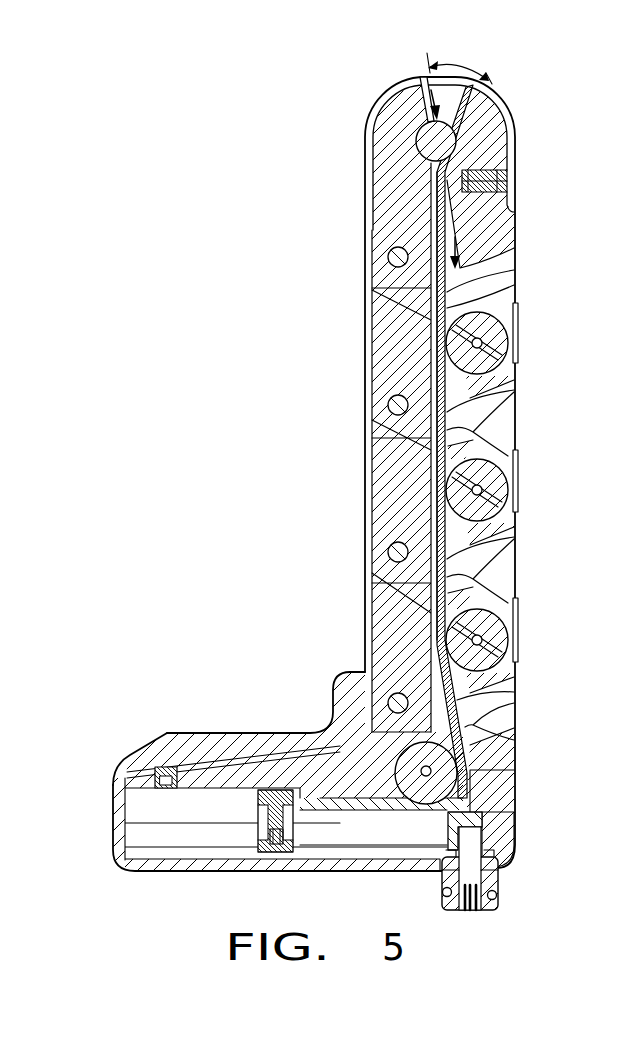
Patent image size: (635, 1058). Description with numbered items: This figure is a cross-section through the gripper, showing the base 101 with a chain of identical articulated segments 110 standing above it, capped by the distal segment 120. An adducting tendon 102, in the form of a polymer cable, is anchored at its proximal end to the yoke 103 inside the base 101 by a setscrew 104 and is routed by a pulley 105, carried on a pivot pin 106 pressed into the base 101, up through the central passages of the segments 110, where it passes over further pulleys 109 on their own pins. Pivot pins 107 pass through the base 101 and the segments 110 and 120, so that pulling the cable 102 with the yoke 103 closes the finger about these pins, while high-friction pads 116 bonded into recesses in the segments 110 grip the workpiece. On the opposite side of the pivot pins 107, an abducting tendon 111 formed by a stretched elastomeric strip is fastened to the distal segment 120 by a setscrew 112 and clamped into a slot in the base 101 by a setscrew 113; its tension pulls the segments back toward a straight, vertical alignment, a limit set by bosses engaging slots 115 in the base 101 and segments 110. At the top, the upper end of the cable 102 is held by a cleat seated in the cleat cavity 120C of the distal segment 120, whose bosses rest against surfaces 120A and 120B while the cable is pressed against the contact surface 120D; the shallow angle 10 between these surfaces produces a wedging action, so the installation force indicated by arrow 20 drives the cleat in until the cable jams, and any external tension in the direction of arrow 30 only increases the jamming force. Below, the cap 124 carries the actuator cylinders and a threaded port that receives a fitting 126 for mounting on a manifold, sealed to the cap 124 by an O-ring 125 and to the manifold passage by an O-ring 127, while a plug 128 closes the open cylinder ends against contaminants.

The angle 10 is at (459, 67).
The arrow 20 is at (417, 82).
The arrow 30 is at (467, 253).
The base 101 is at (208, 733).
The adducting tendon 102 is at (494, 113).
The yoke 103 is at (262, 797).
The setscrew 104 is at (275, 848).
The pulley 105 is at (432, 771).
The pivot pin 106 is at (445, 787).
The pivot pins 107 is at (388, 703).
The pulleys 109 is at (492, 655).
The articulated segments 110 is at (388, 633).
The abducting tendon 111 is at (367, 298).
The setscrew 112 is at (514, 175).
The setscrew 113 is at (163, 770).
The slots 115 is at (497, 725).
The pads 116 is at (518, 612).
The distal segment 120 is at (503, 228).
The surface 120A is at (402, 114).
The surface 120B is at (358, 115).
The cleat cavity 120C is at (400, 158).
The cable contact surface 120D is at (492, 130).
The cap 124 is at (483, 827).
The O-ring 125 is at (488, 883).
The fitting 126 is at (482, 913).
The O-ring 127 is at (496, 895).
The plug 128 is at (115, 815).